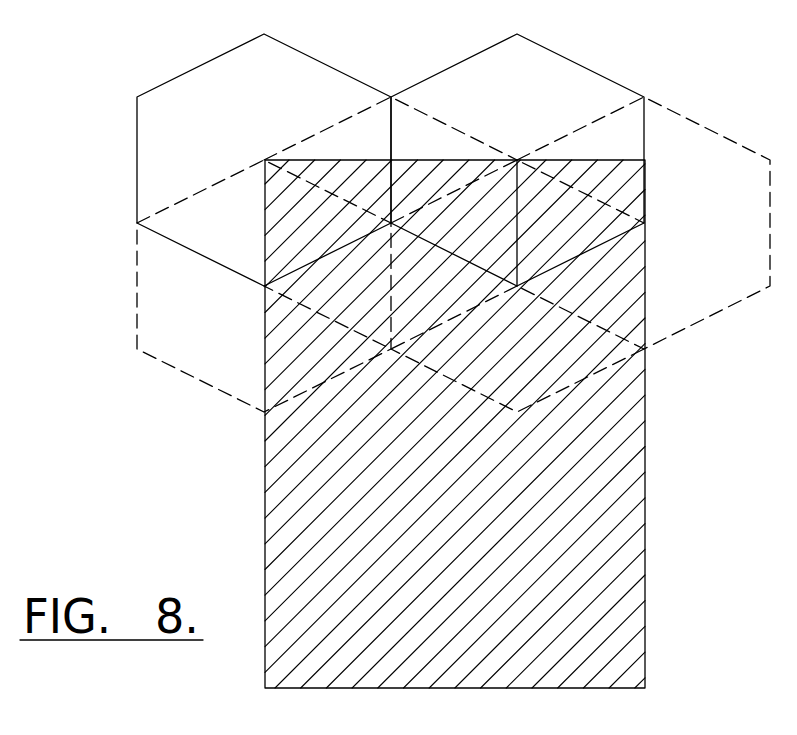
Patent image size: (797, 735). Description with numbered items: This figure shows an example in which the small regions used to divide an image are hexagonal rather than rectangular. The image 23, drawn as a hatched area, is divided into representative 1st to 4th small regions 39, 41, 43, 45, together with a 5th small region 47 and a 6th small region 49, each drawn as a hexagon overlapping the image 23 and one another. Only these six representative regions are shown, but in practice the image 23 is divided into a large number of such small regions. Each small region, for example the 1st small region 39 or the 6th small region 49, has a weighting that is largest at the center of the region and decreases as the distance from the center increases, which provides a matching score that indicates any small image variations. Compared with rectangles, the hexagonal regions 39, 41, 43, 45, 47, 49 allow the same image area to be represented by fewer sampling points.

The image 23 is at (499, 424).
The 1st small region 39 is at (253, 147).
The 2nd small region 41 is at (380, 212).
The 3rd small region 43 is at (264, 314).
The 4th small region 45 is at (527, 152).
The 5th small region 47 is at (647, 233).
The 6th small region 49 is at (517, 314).